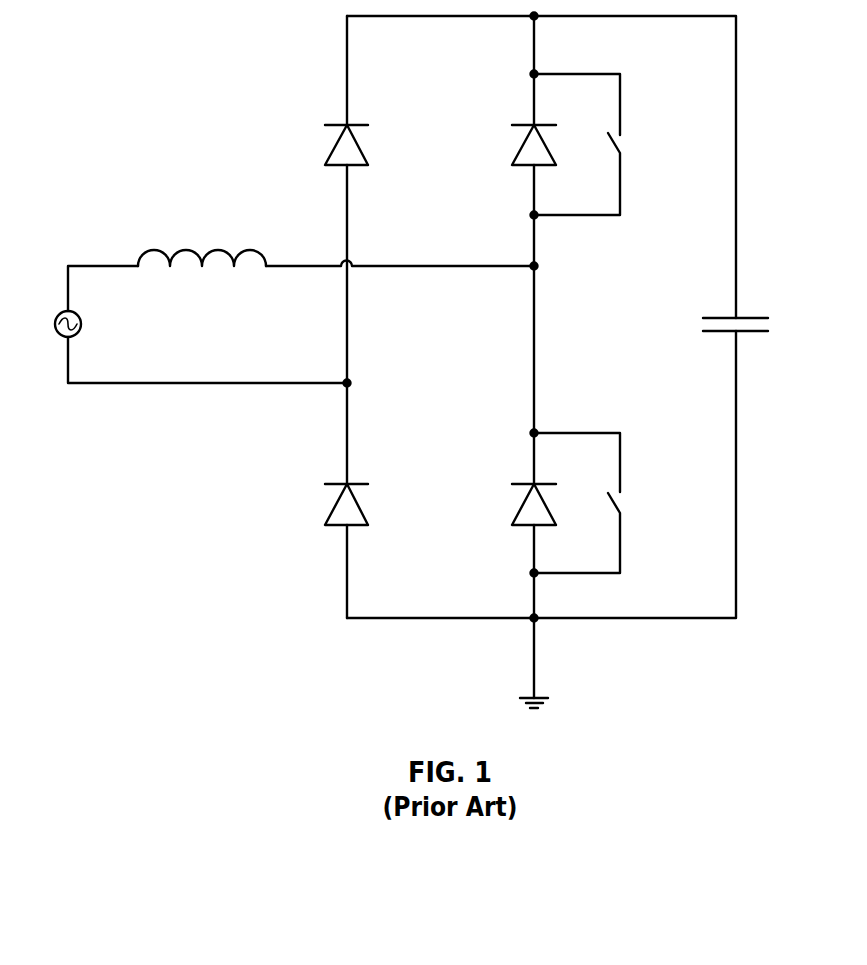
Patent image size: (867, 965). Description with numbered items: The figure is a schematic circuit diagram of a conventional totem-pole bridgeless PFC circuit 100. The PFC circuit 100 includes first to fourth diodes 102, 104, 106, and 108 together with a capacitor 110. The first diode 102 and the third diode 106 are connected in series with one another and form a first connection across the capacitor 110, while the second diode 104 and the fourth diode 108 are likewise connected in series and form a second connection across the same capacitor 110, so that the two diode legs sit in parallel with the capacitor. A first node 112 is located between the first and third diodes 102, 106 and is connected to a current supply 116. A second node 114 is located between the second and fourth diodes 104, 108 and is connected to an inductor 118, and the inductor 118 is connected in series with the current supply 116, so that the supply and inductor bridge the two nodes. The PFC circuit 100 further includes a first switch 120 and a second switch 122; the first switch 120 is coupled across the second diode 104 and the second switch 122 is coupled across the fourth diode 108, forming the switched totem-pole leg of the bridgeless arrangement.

The totem-pole bridgeless PFC circuit 100 is at (107, 57).
The first diode 102 is at (367, 147).
The second diode 104 is at (510, 145).
The third diode 106 is at (370, 508).
The fourth diode 108 is at (515, 503).
The capacitor 110 is at (728, 310).
The first node 112 is at (353, 380).
The second node 114 is at (538, 270).
The current supply 116 is at (87, 327).
The inductor 118 is at (203, 238).
The first switch 120 is at (630, 142).
The second switch 122 is at (630, 500).